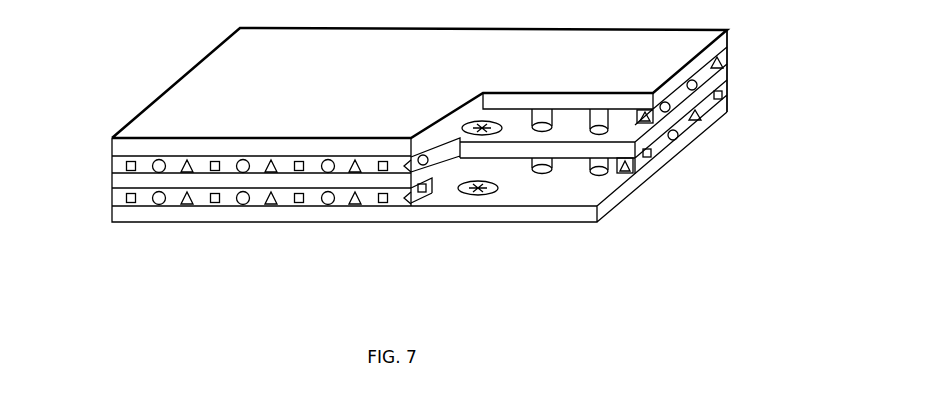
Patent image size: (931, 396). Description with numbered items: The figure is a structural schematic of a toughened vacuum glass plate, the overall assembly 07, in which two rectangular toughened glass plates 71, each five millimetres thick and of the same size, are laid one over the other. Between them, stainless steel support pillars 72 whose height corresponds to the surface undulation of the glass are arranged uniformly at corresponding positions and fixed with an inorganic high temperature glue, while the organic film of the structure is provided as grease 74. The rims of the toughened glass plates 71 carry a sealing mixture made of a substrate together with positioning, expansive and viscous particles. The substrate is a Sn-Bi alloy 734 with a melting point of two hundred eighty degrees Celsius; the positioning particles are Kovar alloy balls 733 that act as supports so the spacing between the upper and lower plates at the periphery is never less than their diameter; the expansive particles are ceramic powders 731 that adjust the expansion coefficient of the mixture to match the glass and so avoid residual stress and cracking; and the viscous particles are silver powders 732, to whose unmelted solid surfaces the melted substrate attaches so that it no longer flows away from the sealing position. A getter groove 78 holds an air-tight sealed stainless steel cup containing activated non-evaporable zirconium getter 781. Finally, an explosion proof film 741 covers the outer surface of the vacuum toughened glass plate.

The layered module assembly 07 is at (730, 271).
The explosion proof film 741 is at (253, 65).
The toughened glass plate 71 is at (122, 212).
The ceramic powders 731 is at (186, 202).
The silver powders 732 is at (213, 204).
The Kovar alloy balls 733 is at (242, 205).
The Sn-Bi alloy substrate 734 is at (276, 204).
The stainless steel support pillars 72 is at (596, 174).
The getter groove 78 is at (487, 194).
The non-evaporable zirconium getter 781 is at (474, 190).
The grease 74 is at (637, 168).